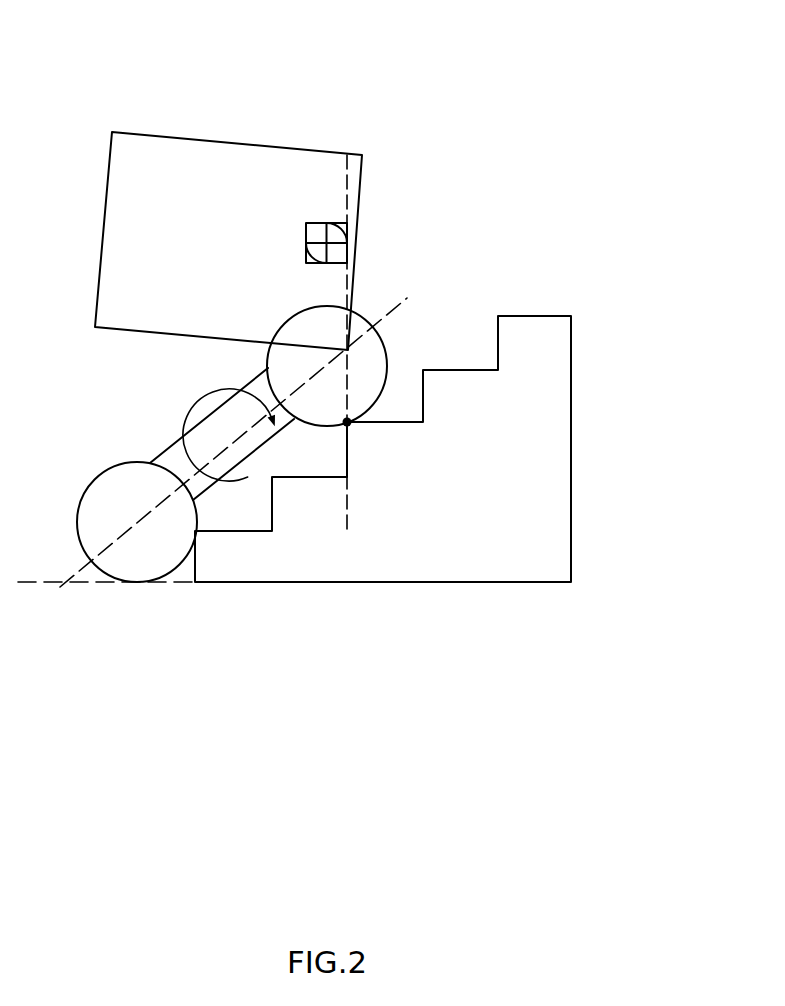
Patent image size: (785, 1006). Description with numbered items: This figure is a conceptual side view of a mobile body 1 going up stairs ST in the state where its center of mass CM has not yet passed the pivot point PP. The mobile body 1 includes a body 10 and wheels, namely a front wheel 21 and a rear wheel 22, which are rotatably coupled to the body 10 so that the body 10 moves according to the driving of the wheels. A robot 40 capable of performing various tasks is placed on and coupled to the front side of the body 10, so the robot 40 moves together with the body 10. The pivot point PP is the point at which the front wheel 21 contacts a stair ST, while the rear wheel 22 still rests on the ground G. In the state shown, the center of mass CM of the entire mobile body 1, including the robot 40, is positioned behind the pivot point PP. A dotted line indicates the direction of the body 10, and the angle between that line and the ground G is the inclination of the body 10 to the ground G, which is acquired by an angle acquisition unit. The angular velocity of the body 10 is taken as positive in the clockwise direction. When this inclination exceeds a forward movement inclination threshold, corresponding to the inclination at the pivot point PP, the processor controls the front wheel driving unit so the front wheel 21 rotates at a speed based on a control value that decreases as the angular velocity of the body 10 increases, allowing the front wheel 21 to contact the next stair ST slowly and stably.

The mobile body 1 is at (178, 76).
The body 10 is at (173, 445).
The front wheel 21 is at (386, 355).
The rear wheel 22 is at (107, 467).
The robot 40 is at (275, 147).
The center of mass CM is at (347, 231).
The stairs ST is at (571, 422).
The ground G is at (87, 583).
The pivot point PP is at (347, 422).